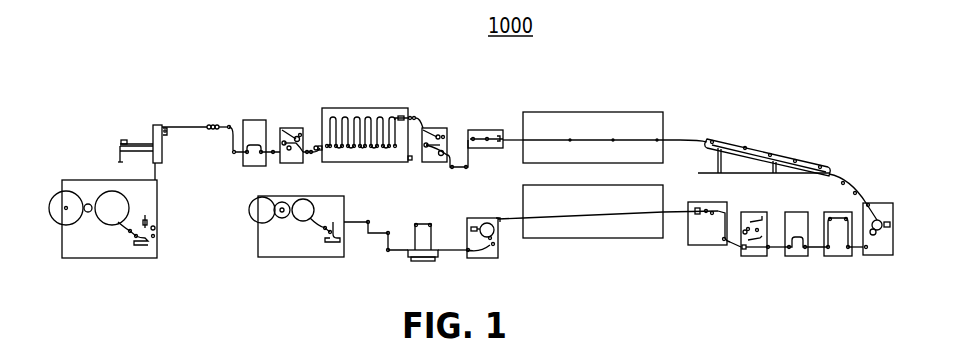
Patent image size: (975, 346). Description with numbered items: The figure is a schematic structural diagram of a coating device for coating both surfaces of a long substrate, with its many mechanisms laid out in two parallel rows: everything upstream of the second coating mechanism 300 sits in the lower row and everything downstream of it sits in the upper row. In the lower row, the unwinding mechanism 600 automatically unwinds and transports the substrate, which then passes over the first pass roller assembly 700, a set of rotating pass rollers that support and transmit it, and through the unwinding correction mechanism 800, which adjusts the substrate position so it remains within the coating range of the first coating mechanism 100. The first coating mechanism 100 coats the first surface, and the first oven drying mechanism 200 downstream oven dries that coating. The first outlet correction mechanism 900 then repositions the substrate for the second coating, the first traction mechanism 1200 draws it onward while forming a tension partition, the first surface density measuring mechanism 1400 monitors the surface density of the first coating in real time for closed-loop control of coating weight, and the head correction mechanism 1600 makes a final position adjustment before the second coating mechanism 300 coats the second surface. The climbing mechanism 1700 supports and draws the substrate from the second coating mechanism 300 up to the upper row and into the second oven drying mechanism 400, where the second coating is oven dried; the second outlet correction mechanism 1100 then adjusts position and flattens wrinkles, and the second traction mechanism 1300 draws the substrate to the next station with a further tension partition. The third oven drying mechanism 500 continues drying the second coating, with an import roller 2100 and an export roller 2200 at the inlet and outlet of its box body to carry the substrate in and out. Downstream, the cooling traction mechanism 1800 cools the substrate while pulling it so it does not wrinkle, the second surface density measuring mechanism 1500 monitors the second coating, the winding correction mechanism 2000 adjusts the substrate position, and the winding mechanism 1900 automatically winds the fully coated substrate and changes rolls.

The first coating mechanism 100 is at (470, 258).
The first oven drying mechanism 200 is at (580, 230).
The second coating mechanism 300 is at (887, 208).
The second oven drying mechanism 400 is at (612, 122).
The third oven drying mechanism 500 is at (363, 113).
The unwinding mechanism 600 is at (278, 242).
The first pass roller assembly 700 is at (377, 243).
The unwinding correction mechanism 800 is at (425, 261).
The first outlet correction mechanism 900 is at (712, 235).
The second outlet correction mechanism 1100 is at (493, 135).
The first traction mechanism 1200 is at (750, 253).
The second traction mechanism 1300 is at (435, 127).
The first surface density measuring mechanism 1400 is at (798, 252).
The second surface density measuring mechanism 1500 is at (252, 128).
The head correction mechanism 1600 is at (845, 250).
The climbing mechanism 1700 is at (756, 151).
The cooling traction mechanism 1800 is at (288, 155).
The winding mechanism 1900 is at (82, 187).
The winding correction mechanism 2000 is at (120, 146).
The import roller 2100 is at (420, 117).
The export roller 2200 is at (315, 145).